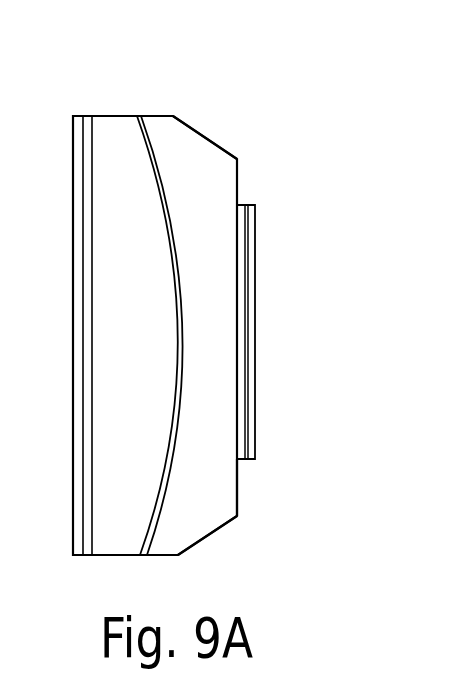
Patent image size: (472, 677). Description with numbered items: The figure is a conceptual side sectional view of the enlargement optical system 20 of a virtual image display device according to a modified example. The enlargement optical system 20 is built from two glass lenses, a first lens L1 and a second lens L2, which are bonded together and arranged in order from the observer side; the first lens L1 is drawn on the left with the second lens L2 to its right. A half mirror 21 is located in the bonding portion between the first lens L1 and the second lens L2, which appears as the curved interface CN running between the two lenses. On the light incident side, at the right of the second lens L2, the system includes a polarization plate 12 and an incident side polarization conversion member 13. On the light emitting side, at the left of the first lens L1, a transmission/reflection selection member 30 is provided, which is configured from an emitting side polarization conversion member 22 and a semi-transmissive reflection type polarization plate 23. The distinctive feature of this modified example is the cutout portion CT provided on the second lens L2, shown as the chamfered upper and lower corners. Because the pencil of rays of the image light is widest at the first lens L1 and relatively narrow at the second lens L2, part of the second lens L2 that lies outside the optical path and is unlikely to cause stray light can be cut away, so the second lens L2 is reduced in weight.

The enlargement optical system 20 is at (208, 80).
The half mirror 21 is at (170, 462).
The transmission/reflection selection member 30 is at (82, 71).
The emitting side polarization conversion member 22 is at (89, 116).
The semi-transmissive reflection type polarization plate 23 is at (74, 116).
The incident side polarization conversion member 13 is at (243, 203).
The polarization plate 12 is at (250, 203).
The curved surface CN is at (136, 116).
The cutout portion CT is at (213, 130).
The first lens L1 is at (110, 416).
The second lens L2 is at (200, 490).